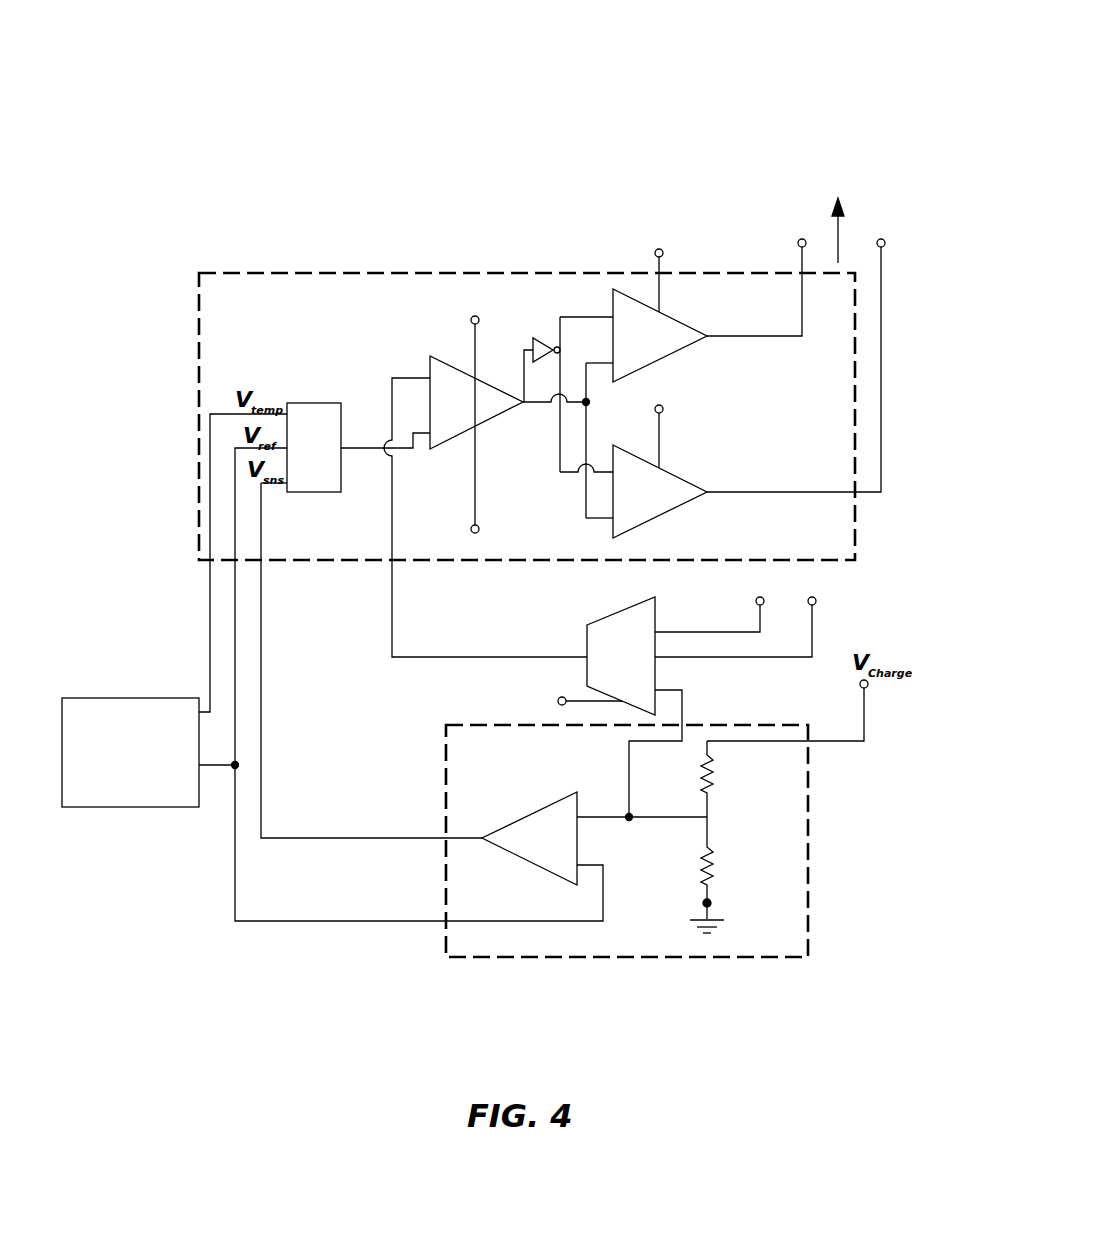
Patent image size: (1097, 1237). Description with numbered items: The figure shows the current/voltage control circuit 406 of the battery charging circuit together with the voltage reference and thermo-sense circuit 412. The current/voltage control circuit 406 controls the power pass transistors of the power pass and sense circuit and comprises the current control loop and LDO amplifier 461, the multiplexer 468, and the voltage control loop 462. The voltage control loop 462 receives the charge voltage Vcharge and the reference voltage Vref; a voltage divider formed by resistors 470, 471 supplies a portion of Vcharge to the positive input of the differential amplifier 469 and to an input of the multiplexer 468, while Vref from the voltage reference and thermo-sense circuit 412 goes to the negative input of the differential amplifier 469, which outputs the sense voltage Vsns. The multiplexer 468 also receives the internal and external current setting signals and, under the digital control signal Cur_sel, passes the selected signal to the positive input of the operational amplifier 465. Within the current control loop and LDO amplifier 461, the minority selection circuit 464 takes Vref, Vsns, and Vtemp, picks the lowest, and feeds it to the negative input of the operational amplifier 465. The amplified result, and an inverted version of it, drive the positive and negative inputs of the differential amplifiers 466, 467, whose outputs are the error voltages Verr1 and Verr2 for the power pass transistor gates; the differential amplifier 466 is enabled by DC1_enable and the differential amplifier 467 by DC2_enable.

The current/voltage control circuit 406 is at (748, 62).
The voltage reference and thermo-sense circuit 412 is at (163, 698).
The current control loop and LDO amplifier 461 is at (352, 272).
The voltage control loop 462 is at (660, 958).
The minority selection circuit 464 is at (328, 403).
The operational amplifier 465 is at (430, 356).
The differential amplifier 466 is at (687, 347).
The differential amplifier 467 is at (687, 477).
The multiplexer 468 is at (587, 635).
The differential amplifier 469 is at (526, 818).
The resistor 470 is at (735, 779).
The resistor 471 is at (735, 860).